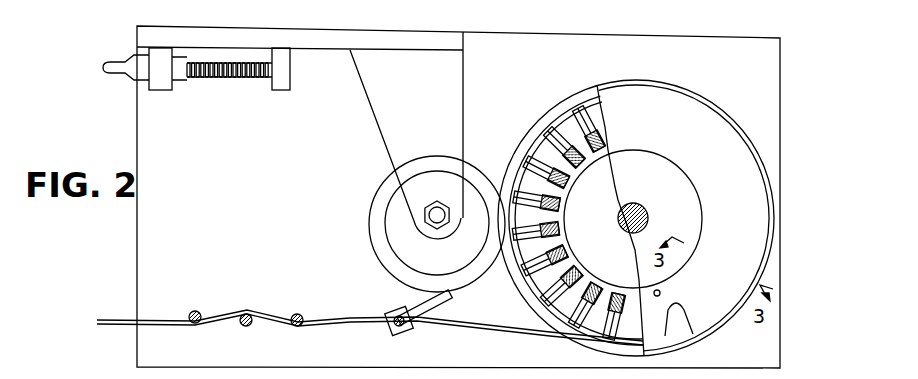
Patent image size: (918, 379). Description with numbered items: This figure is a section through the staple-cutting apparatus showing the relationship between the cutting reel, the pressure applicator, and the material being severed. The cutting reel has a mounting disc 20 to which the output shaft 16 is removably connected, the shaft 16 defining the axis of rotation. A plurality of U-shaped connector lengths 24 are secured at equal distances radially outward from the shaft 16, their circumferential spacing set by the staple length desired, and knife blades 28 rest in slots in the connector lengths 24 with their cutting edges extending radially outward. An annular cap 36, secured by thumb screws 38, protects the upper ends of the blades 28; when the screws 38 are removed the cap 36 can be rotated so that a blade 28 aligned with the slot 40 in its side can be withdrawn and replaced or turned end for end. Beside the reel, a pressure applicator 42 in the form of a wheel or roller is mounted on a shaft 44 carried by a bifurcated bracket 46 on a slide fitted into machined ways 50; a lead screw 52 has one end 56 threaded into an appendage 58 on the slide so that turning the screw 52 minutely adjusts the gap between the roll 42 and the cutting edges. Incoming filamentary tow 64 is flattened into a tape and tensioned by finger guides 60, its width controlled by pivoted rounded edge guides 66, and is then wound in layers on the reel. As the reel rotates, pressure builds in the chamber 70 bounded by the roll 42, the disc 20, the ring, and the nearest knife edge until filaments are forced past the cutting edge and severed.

The machined ways 50 is at (372, 43).
The bifurcated bracket 46 is at (423, 98).
The shaft 44 is at (438, 200).
The pressure applicator 42 is at (368, 203).
The lead screw 52 is at (118, 76).
The end of lead screw 56 is at (228, 76).
The appendage 58 is at (280, 92).
The annular cap 36 is at (665, 106).
The pressure chamber 70 is at (565, 211).
The mounting disc 20 is at (683, 216).
The output shaft 16 is at (625, 203).
The knife blades 28 is at (599, 151).
The connector lengths 24 is at (558, 204).
The thumb screws 38 is at (661, 291).
The slot 40 is at (677, 332).
The filamentary tow 64 is at (110, 320).
The finger guides 60 is at (292, 312).
The rounded edge guides 66 is at (422, 298).